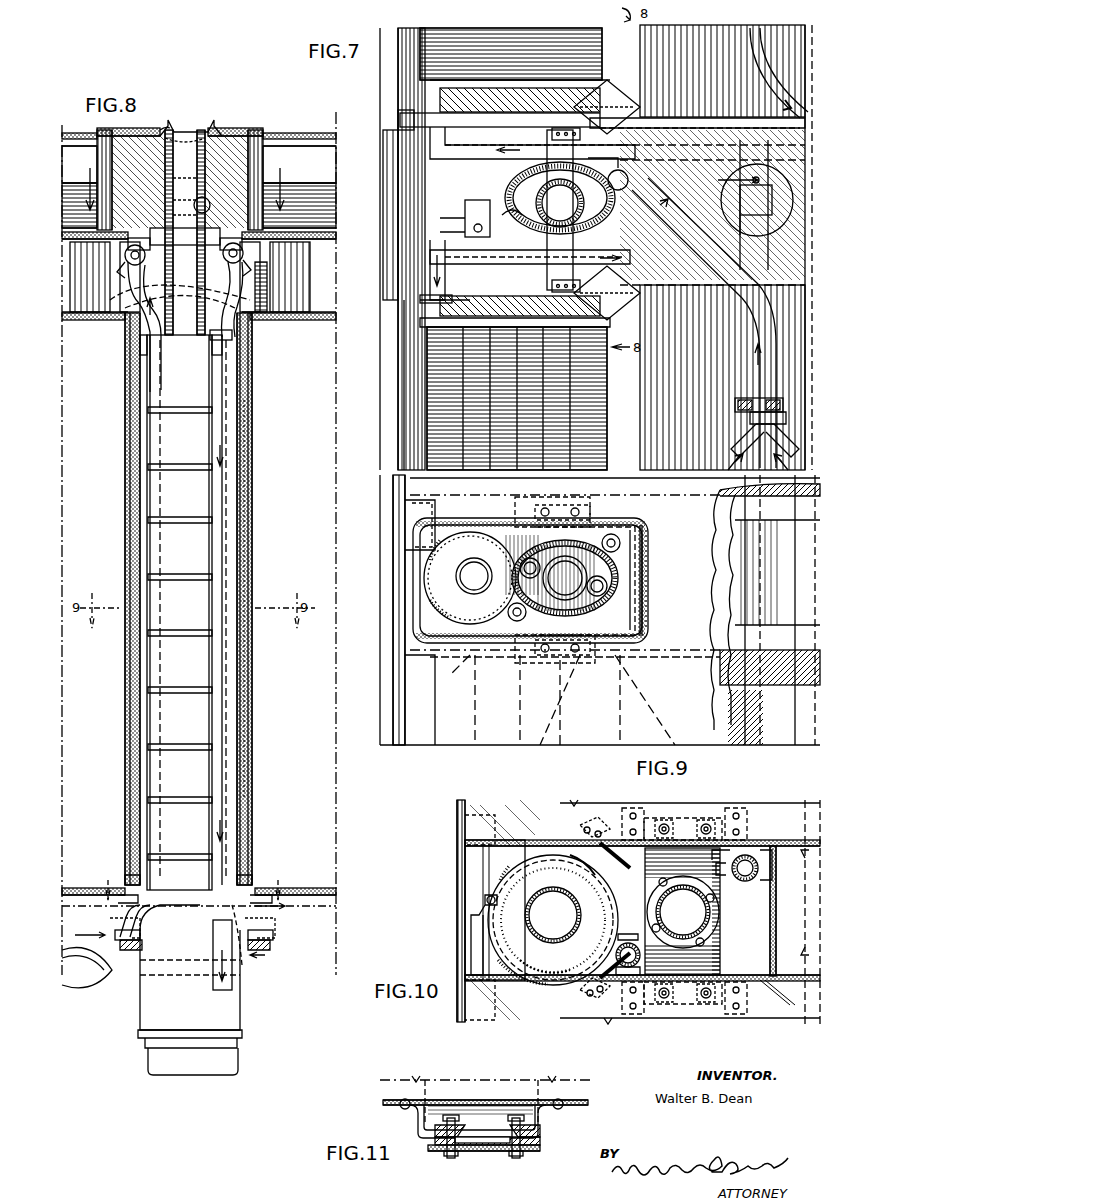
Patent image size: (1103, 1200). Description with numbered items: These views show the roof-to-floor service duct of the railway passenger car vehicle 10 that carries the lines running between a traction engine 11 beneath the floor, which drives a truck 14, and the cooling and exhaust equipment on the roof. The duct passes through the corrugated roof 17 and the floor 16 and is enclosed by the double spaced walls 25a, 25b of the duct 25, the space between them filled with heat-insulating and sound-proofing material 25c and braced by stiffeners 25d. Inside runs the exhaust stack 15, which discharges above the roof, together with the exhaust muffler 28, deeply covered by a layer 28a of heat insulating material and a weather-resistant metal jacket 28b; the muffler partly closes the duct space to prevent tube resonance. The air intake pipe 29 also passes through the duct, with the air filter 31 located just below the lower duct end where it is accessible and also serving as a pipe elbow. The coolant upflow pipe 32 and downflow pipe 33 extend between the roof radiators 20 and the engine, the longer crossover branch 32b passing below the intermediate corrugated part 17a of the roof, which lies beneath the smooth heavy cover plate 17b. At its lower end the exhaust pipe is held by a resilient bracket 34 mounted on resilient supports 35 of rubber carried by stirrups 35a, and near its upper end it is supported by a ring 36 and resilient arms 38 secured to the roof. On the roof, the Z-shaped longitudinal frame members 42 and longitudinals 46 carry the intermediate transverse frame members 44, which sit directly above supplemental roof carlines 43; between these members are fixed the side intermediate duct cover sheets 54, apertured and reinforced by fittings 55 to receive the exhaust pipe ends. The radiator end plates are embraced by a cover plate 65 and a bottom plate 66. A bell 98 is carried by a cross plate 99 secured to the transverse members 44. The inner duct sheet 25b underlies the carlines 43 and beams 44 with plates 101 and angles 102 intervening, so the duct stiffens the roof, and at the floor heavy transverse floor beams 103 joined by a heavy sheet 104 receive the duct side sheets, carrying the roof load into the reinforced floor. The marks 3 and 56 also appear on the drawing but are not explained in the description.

In FIG. 8, the section line arrow 3 is at (252, 952).
In FIG. 8, the vehicle 10 is at (199, 885).
In FIG. 8, the traction engine 11 is at (270, 948).
In FIG. 8, the truck 14 is at (181, 182).
In FIG. 8, the exhaust stack 15 is at (190, 130).
In FIG. 7, the exhaust stack 15 is at (578, 205).
In FIG. 9, the exhaust stack 15 is at (583, 576).
In FIG. 10, the exhaust stack 15 is at (704, 922).
In FIG. 8, the floor 16 is at (73, 888).
In FIG. 9, the floor 16 is at (588, 742).
In FIG. 8, the corrugated roof 17 is at (324, 220).
In FIG. 7, the corrugated roof 17 is at (340, 208).
In FIG. 8, the intermediate corrugated part of main roof 17a is at (90, 216).
In FIG. 7, the smooth heavy cover plate 17b is at (740, 205).
In FIG. 7, the radiator 20 is at (430, 72).
In FIG. 8, the duct 25 is at (256, 491).
In FIG. 9, the duct 25 is at (638, 642).
In FIG. 10, the duct 25 is at (774, 928).
In FIG. 8, the outer duct wall 25a is at (250, 523).
In FIG. 9, the outer duct wall 25a is at (642, 571).
In FIG. 8, the inner duct wall sheet 25b is at (238, 562).
In FIG. 9, the inner duct wall sheet 25b is at (640, 602).
In FIG. 8, the heat-insulating and sound-proofing material 25c is at (246, 543).
In FIG. 9, the heat-insulating and sound-proofing material 25c is at (646, 587).
In FIG. 8, the stiffener 25d is at (128, 568).
In FIG. 8, the exhaust muffler 28 is at (190, 778).
In FIG. 7, the exhaust muffler 28 is at (522, 228).
In FIG. 9, the exhaust muffler 28 is at (636, 618).
In FIG. 7, the heat insulating layer 28a is at (518, 181).
In FIG. 9, the heat insulating layer 28a is at (616, 552).
In FIG. 7, the metal jacket 28b is at (638, 178).
In FIG. 9, the metal jacket 28b is at (624, 564).
In FIG. 9, the air intake pipe 29 is at (470, 586).
In FIG. 10, the air intake pipe 29 is at (538, 926).
In FIG. 8, the air filter 31 is at (242, 1016).
In FIG. 9, the air filter 31 is at (470, 578).
In FIG. 10, the air filter 31 is at (553, 920).
In FIG. 8, the coolant upflow pipe 32 is at (122, 342).
In FIG. 7, the coolant upflow pipe 32 is at (431, 151).
In FIG. 9, the coolant upflow pipe 32 is at (515, 622).
In FIG. 10, the coolant upflow pipe 32 is at (634, 938).
In FIG. 8, the crossover pipe 32b is at (150, 230).
In FIG. 8, the coolant downflow pipe 33 is at (210, 338).
In FIG. 7, the coolant downflow pipe 33 is at (752, 38).
In FIG. 9, the coolant downflow pipe 33 is at (625, 546).
In FIG. 10, the coolant downflow pipe 33 is at (749, 880).
In FIG. 8, the resilient bracket 34 is at (232, 967).
In FIG. 9, the resilient bracket 34 is at (516, 516).
In FIG. 10, the resilient bracket 34 is at (718, 950).
In FIG. 11, the resilient bracket 34 is at (543, 1142).
In FIG. 8, the resilient support 35 is at (109, 970).
In FIG. 10, the resilient support 35 is at (704, 816).
In FIG. 11, the resilient support 35 is at (549, 1140).
In FIG. 8, the stirrup 35a is at (100, 922).
In FIG. 9, the stirrup 35a is at (578, 502).
In FIG. 10, the stirrup 35a is at (630, 816).
In FIG. 11, the stirrup 35a is at (548, 1121).
In FIG. 8, the ring 36 is at (170, 228).
In FIG. 8, the resilient arm 38 is at (146, 224).
In FIG. 7, the longitudinal structural frame member 42 is at (404, 348).
In FIG. 8, the roof carline 43 is at (95, 270).
In FIG. 8, the intermediate transverse structural frame member 44 is at (102, 142).
In FIG. 7, the intermediate transverse structural frame member 44 is at (822, 132).
In FIG. 7, the longitudinal beam 46 is at (608, 35).
In FIG. 9, the longitudinal beam 46 is at (622, 470).
In FIG. 8, the side intermediate duct cover sheet 54 is at (242, 138).
In FIG. 8, the fitting 55 is at (164, 132).
In FIG. 7, the wall 56 is at (382, 184).
In FIG. 8, the cover plate 65 is at (68, 132).
In FIG. 8, the bottom plate 66 is at (72, 178).
In FIG. 7, the bell 98 is at (730, 218).
In FIG. 7, the cross plate 99 is at (763, 232).
In FIG. 8, the plate 101 is at (107, 295).
In FIG. 8, the angle 102 is at (271, 322).
In FIG. 8, the transverse floor beam 103 is at (145, 904).
In FIG. 9, the transverse floor beam 103 is at (695, 522).
In FIG. 10, the transverse floor beam 103 is at (782, 844).
In FIG. 11, the transverse floor beam 103 is at (512, 1100).
In FIG. 9, the heavy sheet 104 is at (736, 588).